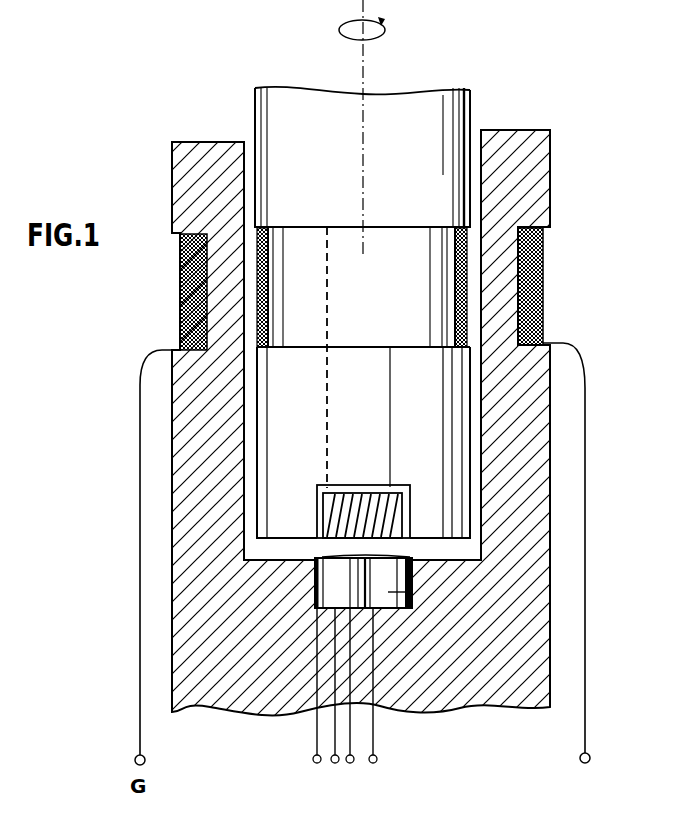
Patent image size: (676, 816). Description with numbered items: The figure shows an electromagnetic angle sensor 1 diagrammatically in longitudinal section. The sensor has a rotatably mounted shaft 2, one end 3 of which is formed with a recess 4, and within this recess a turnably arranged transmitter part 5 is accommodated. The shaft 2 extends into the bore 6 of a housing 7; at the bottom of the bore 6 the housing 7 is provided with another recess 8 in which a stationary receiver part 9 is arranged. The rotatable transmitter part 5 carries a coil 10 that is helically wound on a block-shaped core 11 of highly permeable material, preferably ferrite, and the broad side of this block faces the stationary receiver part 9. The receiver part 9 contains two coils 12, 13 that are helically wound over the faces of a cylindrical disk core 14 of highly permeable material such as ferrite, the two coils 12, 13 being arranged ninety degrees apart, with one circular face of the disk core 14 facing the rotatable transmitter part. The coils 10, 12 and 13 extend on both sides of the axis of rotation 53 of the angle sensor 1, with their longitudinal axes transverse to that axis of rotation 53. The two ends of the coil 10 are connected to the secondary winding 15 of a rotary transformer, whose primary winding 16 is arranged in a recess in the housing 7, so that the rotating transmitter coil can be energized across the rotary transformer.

The electromagnetic angle sensor 1 is at (490, 83).
The shaft 2 is at (315, 154).
The end of the shaft 3 is at (268, 536).
The recess 4 is at (398, 491).
The transmitter part 5 is at (354, 481).
The bore 6 is at (475, 146).
The housing 7 is at (536, 176).
The recess 8 is at (314, 580).
The receiver part 9 is at (418, 583).
The coil 10 is at (390, 515).
The core 11 is at (332, 522).
The coil 12 is at (386, 610).
The coil 13 is at (360, 556).
The disk core 14 is at (412, 596).
The secondary winding 15 is at (437, 242).
The primary winding 16 is at (543, 301).
The axis of rotation 53 is at (363, 78).